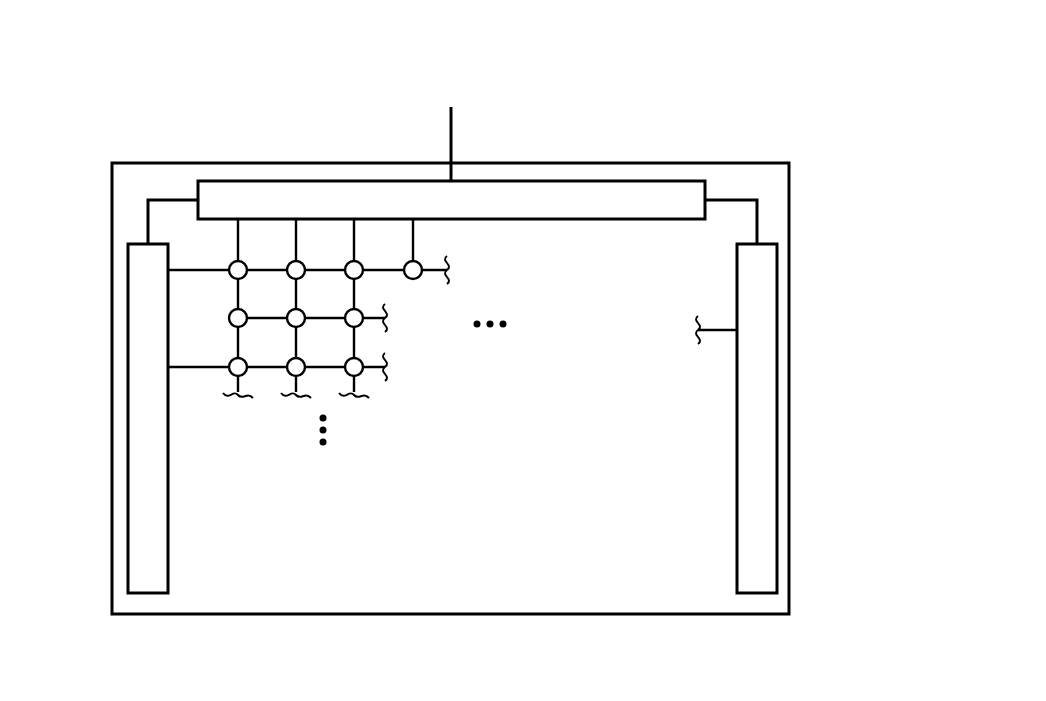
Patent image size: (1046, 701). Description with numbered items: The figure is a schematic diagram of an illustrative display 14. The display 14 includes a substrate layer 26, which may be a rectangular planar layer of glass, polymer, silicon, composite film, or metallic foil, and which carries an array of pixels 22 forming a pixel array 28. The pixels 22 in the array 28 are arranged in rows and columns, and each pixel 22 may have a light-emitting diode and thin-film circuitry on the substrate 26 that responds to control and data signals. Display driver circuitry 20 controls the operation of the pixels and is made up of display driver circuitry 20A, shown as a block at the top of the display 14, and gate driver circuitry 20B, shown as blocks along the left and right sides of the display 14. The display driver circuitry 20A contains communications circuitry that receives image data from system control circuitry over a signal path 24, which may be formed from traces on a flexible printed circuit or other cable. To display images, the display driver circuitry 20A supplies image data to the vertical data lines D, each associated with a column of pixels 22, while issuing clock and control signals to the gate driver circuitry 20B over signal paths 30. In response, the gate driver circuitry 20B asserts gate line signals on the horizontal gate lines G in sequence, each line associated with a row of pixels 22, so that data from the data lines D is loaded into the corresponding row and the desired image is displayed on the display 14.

The display 14 is at (672, 56).
The display driver circuitry 20 is at (238, 134).
The display driver circuitry 20A is at (342, 179).
The gate driver circuitry 20B is at (144, 470).
The pixels 22 is at (419, 261).
The signal path 24 is at (451, 132).
The substrate layer 26 is at (729, 162).
The pixel array 28 is at (417, 412).
The signal paths 30 is at (148, 213).